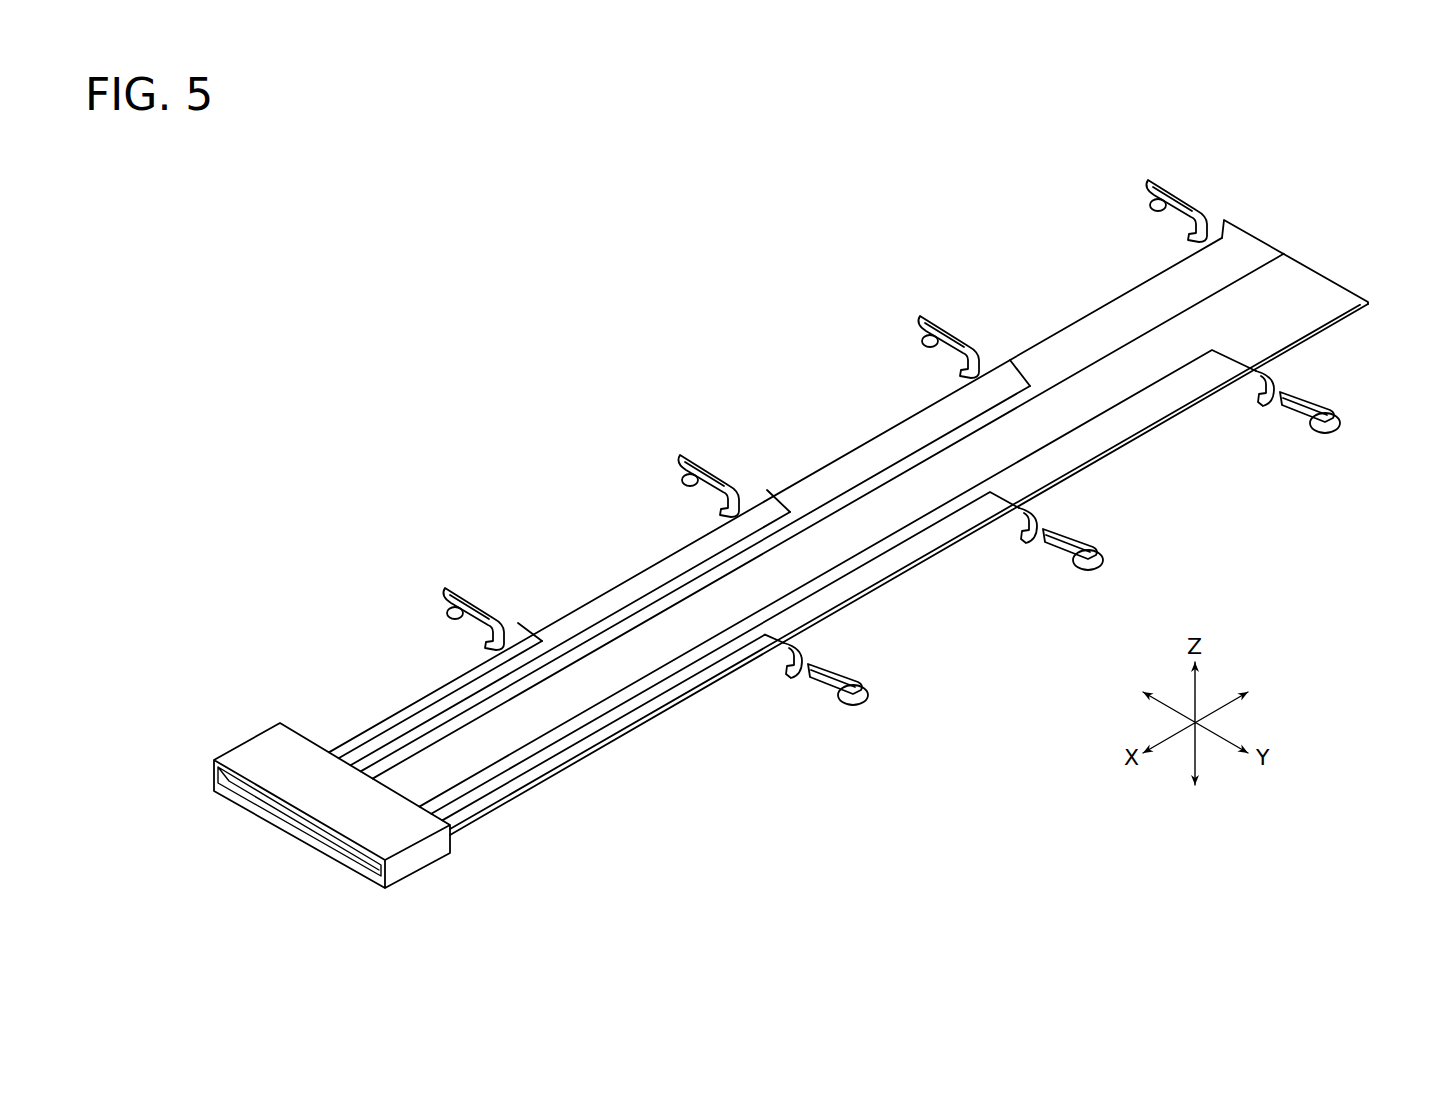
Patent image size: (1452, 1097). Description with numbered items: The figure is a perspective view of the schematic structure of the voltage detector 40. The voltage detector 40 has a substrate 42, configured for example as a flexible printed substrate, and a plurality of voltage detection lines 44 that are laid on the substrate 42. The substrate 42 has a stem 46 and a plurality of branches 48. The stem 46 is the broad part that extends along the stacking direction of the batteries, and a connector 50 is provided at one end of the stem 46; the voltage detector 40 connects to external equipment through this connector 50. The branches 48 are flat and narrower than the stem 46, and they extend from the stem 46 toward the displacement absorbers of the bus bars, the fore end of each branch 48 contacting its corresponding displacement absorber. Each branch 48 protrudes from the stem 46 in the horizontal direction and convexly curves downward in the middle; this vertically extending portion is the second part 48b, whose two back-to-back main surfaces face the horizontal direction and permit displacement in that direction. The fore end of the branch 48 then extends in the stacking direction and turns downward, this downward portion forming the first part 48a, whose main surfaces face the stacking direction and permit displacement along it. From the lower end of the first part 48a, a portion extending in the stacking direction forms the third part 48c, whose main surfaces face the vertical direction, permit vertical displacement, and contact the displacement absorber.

The voltage detector 40 is at (850, 940).
The substrate 42 is at (1350, 290).
The voltage detection lines 44 is at (1268, 268).
The stem 46 is at (1146, 406).
The branch 48 is at (1290, 400).
The first part 48a is at (1098, 548).
The second part 48b is at (1030, 560).
The third part 48c is at (1083, 572).
The connector 50 is at (412, 862).